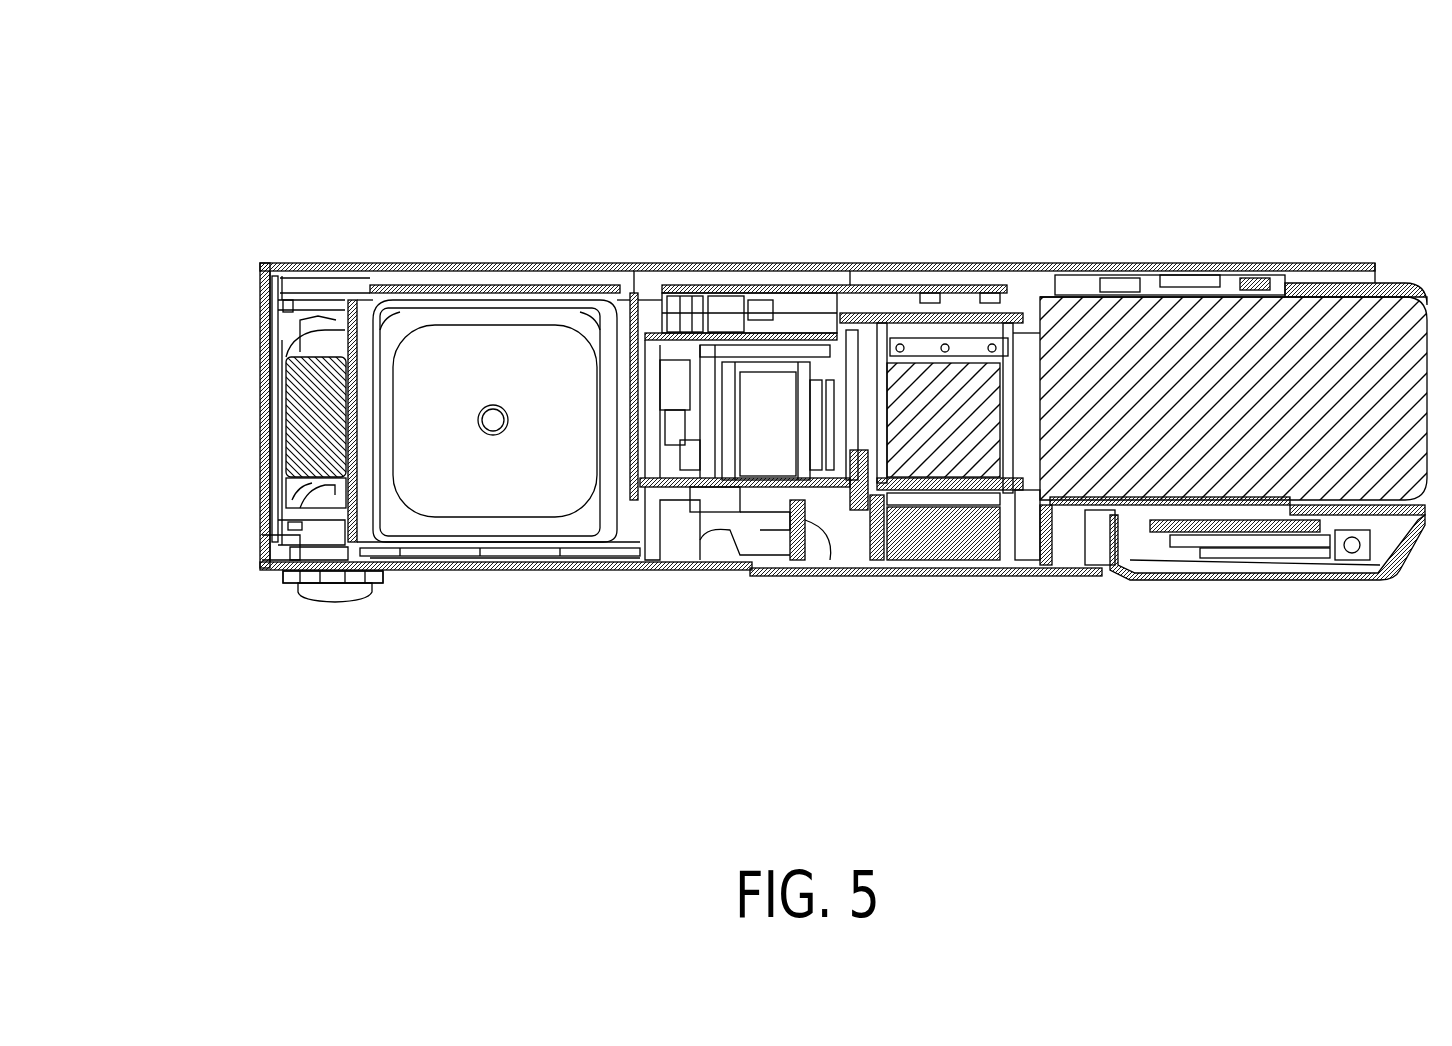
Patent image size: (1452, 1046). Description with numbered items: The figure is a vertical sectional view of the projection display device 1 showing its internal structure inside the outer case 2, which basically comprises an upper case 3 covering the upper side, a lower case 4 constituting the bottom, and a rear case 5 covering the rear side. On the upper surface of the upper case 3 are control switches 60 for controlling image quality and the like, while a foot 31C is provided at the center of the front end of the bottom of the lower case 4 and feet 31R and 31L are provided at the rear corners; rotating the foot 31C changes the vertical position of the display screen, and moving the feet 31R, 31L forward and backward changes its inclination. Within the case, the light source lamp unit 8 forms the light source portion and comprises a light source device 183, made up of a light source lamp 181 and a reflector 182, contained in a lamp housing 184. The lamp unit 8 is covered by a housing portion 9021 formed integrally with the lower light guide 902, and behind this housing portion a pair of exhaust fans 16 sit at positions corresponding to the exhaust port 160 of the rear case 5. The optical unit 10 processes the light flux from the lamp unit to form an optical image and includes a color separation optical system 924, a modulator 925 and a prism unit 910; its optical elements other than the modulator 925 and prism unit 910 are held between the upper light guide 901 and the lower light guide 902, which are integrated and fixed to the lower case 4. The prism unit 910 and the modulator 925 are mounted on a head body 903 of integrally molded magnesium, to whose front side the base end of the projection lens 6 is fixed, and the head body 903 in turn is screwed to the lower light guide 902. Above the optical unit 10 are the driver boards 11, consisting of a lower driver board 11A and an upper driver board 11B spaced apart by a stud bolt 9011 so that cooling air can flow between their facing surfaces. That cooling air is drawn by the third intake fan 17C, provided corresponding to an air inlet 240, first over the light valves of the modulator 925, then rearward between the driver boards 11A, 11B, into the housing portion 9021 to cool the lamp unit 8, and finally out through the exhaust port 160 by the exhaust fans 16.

The projection display device 1 is at (238, 178).
The outer case 2 is at (215, 627).
The upper case 3 is at (310, 262).
The lower case 4 is at (273, 572).
The rear case 5 is at (262, 545).
The projection lens 6 is at (1395, 283).
The light source lamp unit 8 is at (505, 263).
The optical unit 10 is at (828, 263).
The driver boards 11 is at (813, 93).
The lower driver board 11A is at (703, 263).
The upper driver board 11B is at (736, 263).
The exhaust fans 16 is at (292, 432).
The third intake fan 17C is at (958, 577).
The foot 31C is at (1230, 580).
The foot 31L is at (322, 596).
The foot 31R is at (333, 577).
The control switches 60 is at (1260, 266).
The exhaust port 160 is at (258, 398).
The light source lamp 181 is at (487, 437).
The reflector 182 is at (550, 493).
The light source device 183 is at (607, 638).
The lamp housing 184 is at (588, 547).
The air inlet 240 is at (862, 487).
The upper light guide 901 is at (770, 263).
The lower light guide 902 is at (738, 488).
The head body 903 is at (998, 492).
The stud bolt 9011 is at (635, 263).
The housing portion 9021 is at (388, 263).
The prism unit 910 is at (985, 463).
The color separation optical system 924 is at (762, 444).
The modulator 925 is at (880, 577).